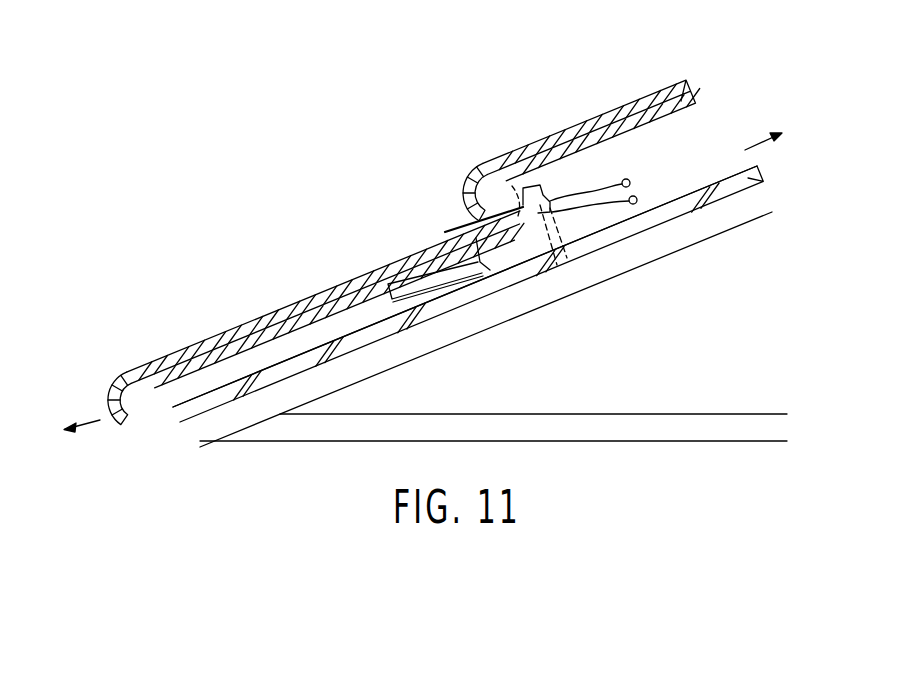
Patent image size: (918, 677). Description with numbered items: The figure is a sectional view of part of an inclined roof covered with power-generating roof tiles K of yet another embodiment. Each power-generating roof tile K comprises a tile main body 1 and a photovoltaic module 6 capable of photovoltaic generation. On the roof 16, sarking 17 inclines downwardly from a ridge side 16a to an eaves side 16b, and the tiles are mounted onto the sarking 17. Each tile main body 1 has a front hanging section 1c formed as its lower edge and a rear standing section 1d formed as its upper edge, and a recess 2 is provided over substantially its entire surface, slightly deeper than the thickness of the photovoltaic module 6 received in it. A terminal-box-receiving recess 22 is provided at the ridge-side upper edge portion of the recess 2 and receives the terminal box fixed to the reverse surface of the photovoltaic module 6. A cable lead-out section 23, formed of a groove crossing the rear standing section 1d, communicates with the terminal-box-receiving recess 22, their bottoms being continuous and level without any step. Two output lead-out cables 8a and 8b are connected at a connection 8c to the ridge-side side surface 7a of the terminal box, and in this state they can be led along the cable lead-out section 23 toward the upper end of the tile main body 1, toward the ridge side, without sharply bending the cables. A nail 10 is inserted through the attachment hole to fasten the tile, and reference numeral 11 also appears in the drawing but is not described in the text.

The power-generating roof tile K is at (187, 345).
The tile main body 1 is at (364, 327).
The front hanging section 1c is at (120, 383).
The rear standing section 1d is at (555, 190).
The recess 2 is at (297, 320).
The photovoltaic module 6 is at (347, 283).
The side surface of the terminal box 7a is at (468, 250).
The output lead-out cable 8a is at (610, 208).
The output lead-out cable 8b is at (610, 230).
The connection 8c is at (485, 275).
The nail 10 is at (478, 165).
The joint 11 is at (510, 162).
The roof 16 is at (713, 152).
The ridge side 16a is at (750, 143).
The eaves side 16b is at (92, 433).
The sarking 17 is at (715, 192).
The terminal-box-receiving recess 22 is at (472, 262).
The cable lead-out section 23 is at (537, 207).